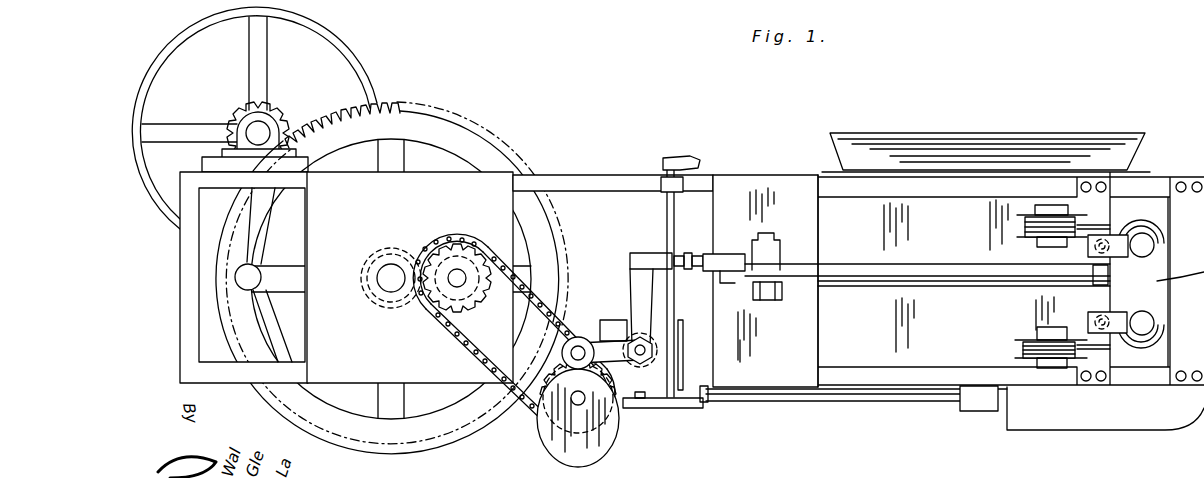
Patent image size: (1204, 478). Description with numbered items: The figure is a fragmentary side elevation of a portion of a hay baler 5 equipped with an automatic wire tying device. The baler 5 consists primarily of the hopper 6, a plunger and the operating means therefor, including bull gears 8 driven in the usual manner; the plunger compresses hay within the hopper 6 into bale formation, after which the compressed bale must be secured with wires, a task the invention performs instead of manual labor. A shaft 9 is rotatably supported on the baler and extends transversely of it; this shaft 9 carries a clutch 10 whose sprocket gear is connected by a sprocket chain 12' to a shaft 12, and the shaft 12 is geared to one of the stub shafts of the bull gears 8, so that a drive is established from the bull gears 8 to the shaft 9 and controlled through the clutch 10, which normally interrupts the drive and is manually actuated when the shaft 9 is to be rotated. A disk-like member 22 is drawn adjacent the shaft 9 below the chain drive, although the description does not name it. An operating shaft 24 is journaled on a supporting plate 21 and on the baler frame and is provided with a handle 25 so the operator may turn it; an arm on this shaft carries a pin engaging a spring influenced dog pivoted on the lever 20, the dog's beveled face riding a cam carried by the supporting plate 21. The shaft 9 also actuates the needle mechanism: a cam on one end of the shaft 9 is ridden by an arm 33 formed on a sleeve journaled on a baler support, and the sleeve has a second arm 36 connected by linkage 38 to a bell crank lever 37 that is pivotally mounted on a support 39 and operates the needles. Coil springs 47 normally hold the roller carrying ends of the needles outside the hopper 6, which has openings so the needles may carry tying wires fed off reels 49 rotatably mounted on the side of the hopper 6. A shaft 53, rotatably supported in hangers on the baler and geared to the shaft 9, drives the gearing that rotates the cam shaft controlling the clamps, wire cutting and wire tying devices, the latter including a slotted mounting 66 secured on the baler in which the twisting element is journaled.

The hay baler 5 is at (757, 170).
The hopper 6 is at (918, 140).
The bull gears 8 is at (398, 122).
The shaft 9 is at (576, 399).
The clutch 10 is at (553, 365).
The shaft 12 is at (457, 258).
The sprocket chain 12' is at (510, 304).
The lever 20 is at (656, 404).
The supporting plate 21 is at (688, 408).
The cam disk 22 is at (546, 456).
The operating shaft 24 is at (665, 212).
The handle 25 is at (698, 161).
The arm 33 is at (598, 342).
The arm 36 is at (636, 281).
The bell crank lever 37 is at (936, 264).
The linkage 38 is at (727, 254).
The support 39 is at (822, 294).
The coil springs 47 is at (1087, 247).
The reels 49 is at (1023, 336).
The shaft 53 is at (846, 404).
The slotted mounting 66 is at (1010, 420).